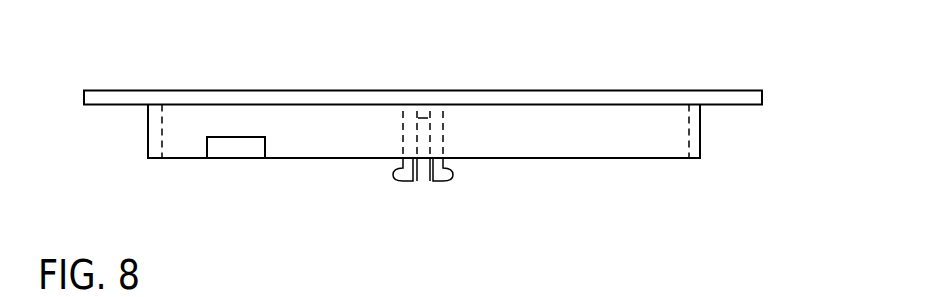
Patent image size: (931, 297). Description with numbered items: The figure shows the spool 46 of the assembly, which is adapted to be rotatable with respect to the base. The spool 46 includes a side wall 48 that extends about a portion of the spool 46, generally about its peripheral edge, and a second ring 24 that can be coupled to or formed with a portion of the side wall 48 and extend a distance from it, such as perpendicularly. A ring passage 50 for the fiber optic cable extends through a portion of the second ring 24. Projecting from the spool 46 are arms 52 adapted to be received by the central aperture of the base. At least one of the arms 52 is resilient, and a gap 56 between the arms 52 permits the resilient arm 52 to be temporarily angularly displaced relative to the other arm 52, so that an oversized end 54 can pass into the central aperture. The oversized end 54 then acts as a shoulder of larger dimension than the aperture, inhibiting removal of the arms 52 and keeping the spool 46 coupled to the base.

The spool 46 is at (456, 153).
The side wall 48 is at (513, 86).
The second ring 24 is at (703, 143).
The ring passage 50 is at (237, 154).
The arms 52 is at (398, 166).
The oversized end 54 is at (410, 181).
The gap 56 is at (422, 186).